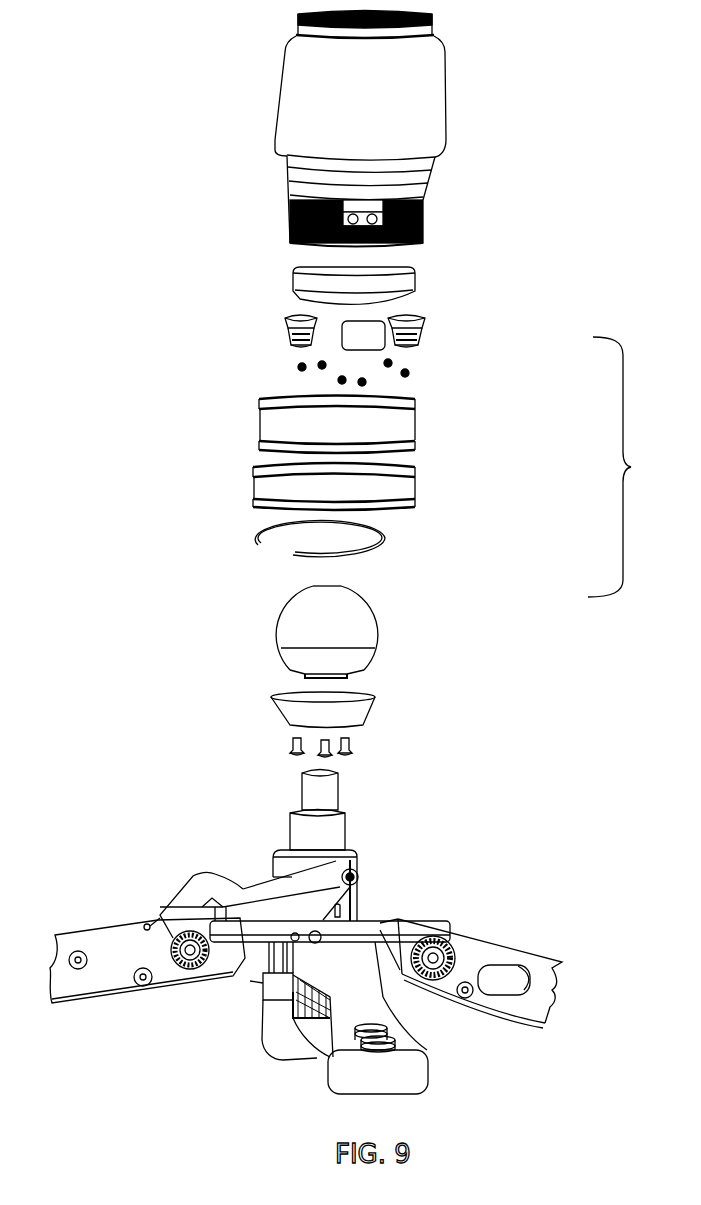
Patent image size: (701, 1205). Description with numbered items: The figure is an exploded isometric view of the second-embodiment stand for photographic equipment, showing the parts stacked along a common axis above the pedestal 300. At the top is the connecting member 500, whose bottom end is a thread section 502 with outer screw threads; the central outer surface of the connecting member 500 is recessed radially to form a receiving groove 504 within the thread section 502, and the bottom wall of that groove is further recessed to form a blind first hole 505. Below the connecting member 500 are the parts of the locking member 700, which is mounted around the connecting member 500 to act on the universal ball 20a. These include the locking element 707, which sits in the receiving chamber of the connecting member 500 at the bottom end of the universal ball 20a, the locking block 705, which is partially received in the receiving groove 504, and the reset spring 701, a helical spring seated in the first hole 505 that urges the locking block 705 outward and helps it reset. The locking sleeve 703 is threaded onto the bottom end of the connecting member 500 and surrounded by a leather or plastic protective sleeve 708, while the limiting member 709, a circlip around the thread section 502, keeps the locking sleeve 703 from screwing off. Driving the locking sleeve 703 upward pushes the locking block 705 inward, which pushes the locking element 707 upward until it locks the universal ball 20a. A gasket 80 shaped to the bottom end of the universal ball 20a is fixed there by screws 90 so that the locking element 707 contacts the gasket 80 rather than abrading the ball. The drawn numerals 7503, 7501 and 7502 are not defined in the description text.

The connecting member 500 is at (397, 58).
The thread section 502 is at (423, 200).
The first hole 505 is at (417, 243).
The receiving groove 504 is at (383, 243).
The locking member 700 is at (642, 467).
The locking element 707 is at (400, 290).
The clamp head 7503 is at (290, 315).
The clamp base 7501 is at (287, 337).
The screws 7502 is at (303, 344).
The locking block 705 is at (420, 340).
The reset spring 701 is at (407, 374).
The locking sleeve 703 is at (410, 447).
The protective sleeve 708 is at (410, 507).
The limiting member 709 is at (400, 543).
The universal ball 20a is at (350, 636).
The gasket 80 is at (350, 708).
The screws 90 is at (350, 747).
The pedestal 300 is at (510, 957).